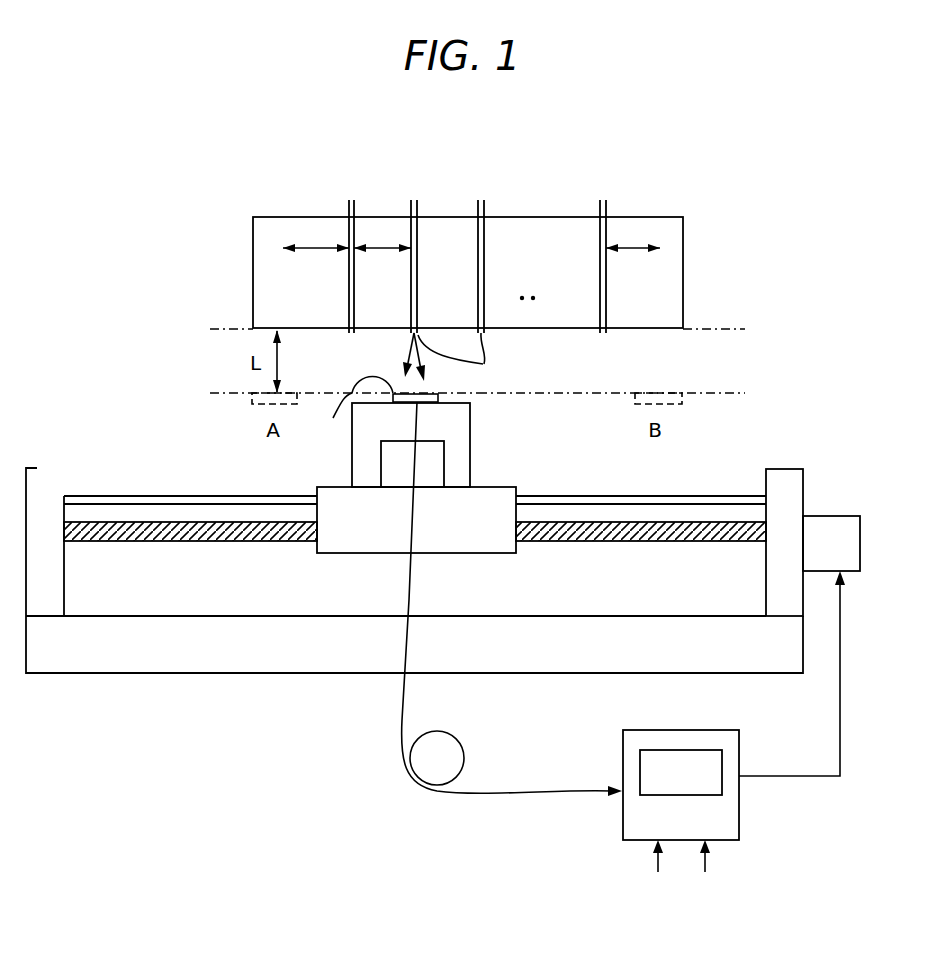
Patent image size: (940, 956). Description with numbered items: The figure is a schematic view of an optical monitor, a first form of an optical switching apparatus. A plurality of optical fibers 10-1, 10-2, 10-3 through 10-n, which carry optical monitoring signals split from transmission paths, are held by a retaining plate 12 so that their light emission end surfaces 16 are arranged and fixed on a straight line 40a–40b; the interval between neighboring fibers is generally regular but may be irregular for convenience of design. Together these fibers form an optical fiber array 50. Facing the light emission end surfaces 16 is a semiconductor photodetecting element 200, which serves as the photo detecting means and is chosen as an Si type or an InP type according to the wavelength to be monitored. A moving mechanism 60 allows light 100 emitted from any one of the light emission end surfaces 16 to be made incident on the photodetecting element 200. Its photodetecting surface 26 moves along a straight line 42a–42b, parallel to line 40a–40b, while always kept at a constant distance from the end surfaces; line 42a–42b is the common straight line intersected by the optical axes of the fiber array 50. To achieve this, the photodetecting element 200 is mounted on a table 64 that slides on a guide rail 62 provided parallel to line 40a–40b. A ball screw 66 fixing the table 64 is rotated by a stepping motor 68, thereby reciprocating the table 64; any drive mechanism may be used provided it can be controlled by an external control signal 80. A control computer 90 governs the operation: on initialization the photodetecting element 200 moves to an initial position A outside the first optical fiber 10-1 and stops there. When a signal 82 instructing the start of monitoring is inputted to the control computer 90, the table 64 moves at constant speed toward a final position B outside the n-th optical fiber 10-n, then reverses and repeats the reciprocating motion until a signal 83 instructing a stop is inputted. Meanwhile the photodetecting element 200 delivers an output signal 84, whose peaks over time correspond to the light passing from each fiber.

The first optical fiber 10-1 is at (347, 251).
The optical fiber 10-2 is at (412, 251).
The optical fiber 10-3 is at (480, 251).
The n-th optical fiber 10-n is at (601, 251).
The retaining plate 12 is at (253, 281).
The light emission end surfaces 16 is at (467, 358).
The photodetecting surface 26 is at (349, 403).
The straight line end point 40a is at (209, 329).
The straight line end point 40b is at (741, 329).
The straight line end point 42a is at (321, 393).
The straight line end point 42b is at (639, 393).
The optical fiber array 50 is at (475, 251).
The moving mechanism 60 is at (472, 538).
The guide rail 62 is at (193, 496).
The table 64 is at (342, 497).
The ball screw 66 is at (193, 543).
The stepping motor 68 is at (850, 543).
The external control signal 80 is at (845, 692).
The start signal 82 is at (657, 872).
The stop signal 83 is at (704, 872).
The output signal 84 is at (593, 797).
The control computer 90 is at (740, 826).
The light 100 is at (409, 356).
The semiconductor photodetecting element 200 is at (438, 399).